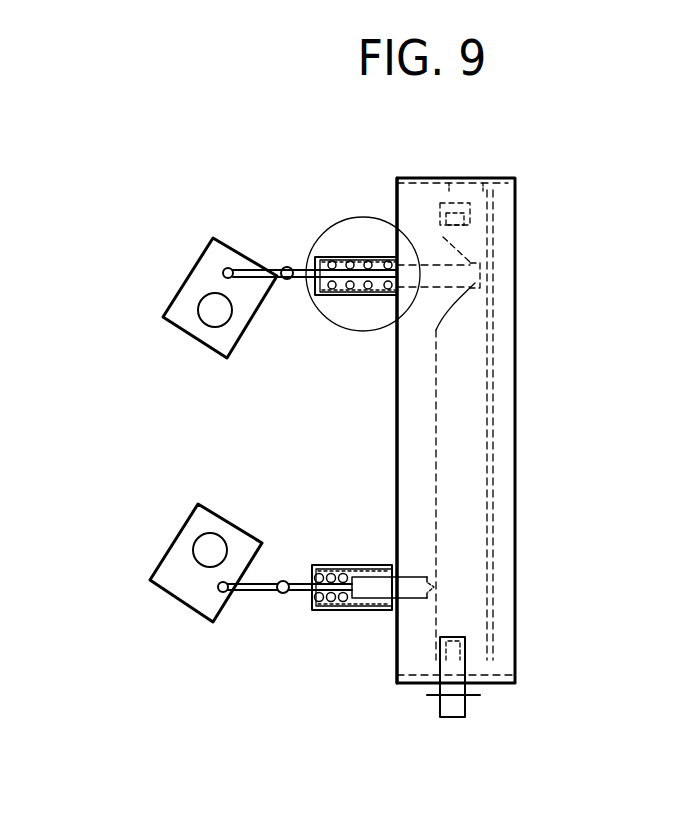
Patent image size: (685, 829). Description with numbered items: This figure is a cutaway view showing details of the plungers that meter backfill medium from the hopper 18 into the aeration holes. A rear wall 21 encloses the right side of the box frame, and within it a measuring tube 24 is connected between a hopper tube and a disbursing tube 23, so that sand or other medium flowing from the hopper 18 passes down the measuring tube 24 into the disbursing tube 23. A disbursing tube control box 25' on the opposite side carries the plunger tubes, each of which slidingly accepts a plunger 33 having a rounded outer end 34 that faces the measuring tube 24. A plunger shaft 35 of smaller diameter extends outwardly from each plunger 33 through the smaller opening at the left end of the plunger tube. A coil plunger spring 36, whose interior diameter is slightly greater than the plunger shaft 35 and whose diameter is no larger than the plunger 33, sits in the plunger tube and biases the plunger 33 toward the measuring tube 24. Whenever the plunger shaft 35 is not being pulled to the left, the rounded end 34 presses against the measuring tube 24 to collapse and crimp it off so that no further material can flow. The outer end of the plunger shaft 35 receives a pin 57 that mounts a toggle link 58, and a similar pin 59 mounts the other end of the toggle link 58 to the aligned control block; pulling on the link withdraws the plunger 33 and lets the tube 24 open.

The hopper 18 is at (460, 212).
The rear wall 21 is at (515, 327).
The disbursing tube 23 is at (453, 707).
The measuring tube 24 is at (467, 445).
The disbursing tube control box 25' is at (286, 430).
The plunger 33 is at (383, 598).
The rounded outer end 34 is at (428, 585).
The plunger shaft 35 is at (301, 583).
The plunger spring 36 is at (328, 610).
The pin 57 is at (284, 581).
The toggle link 58 is at (252, 592).
The pin 59 is at (220, 590).